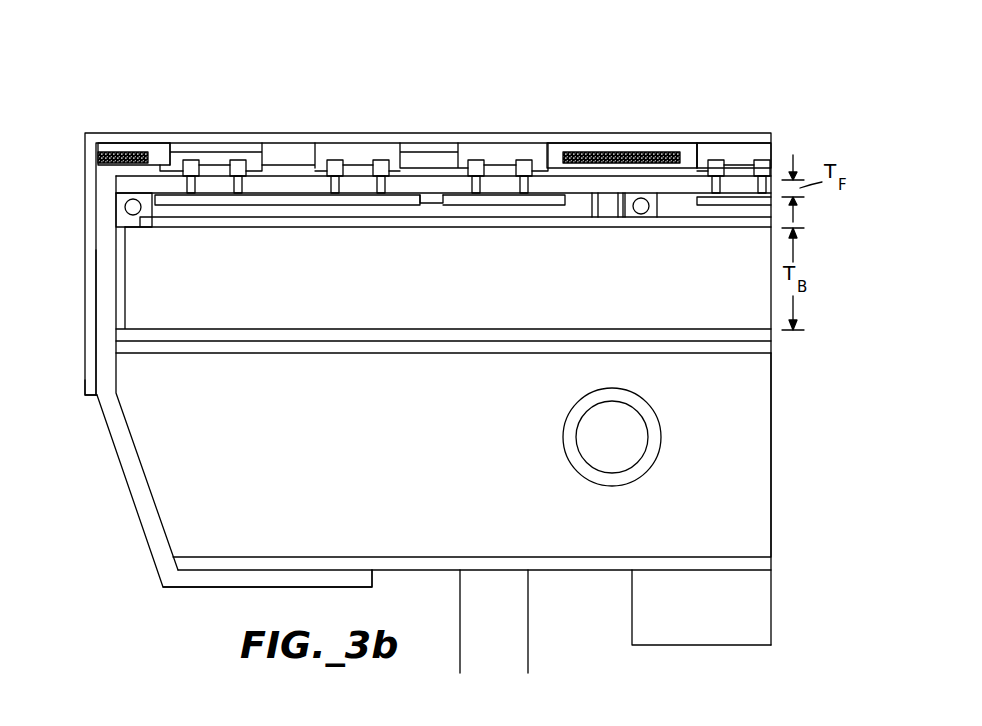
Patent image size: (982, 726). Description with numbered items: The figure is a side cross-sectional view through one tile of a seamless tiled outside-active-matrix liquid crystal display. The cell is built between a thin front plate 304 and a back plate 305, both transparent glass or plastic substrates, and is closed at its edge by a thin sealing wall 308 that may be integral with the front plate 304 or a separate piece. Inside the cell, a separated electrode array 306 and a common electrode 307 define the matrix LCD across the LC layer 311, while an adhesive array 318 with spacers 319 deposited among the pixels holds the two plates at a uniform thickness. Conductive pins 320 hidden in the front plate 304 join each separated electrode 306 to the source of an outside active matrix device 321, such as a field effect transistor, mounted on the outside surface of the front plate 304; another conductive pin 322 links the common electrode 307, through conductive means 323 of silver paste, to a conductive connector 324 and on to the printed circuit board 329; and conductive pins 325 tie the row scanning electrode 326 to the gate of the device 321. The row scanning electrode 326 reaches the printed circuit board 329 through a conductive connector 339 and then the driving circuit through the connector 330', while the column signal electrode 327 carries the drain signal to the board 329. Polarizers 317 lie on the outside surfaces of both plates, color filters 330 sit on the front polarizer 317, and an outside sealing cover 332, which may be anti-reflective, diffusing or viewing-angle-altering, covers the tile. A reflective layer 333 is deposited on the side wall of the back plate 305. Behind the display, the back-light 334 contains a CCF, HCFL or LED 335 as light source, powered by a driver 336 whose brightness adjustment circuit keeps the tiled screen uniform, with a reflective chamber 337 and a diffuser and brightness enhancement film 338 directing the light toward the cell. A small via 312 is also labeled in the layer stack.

The thin front plate 304 is at (108, 168).
The back plate 305 is at (140, 255).
The separated electrode array 306 is at (216, 165).
The common electrode 307 is at (350, 213).
The thin sealing wall 308 is at (103, 311).
The LC layer 311 is at (363, 203).
The via 312 is at (612, 235).
The polarizers 317 is at (742, 148).
The adhesive array 318 is at (648, 178).
The spacers 319 is at (646, 200).
The conductive pins 320 is at (432, 195).
The outside active matrix device 321 is at (760, 143).
The conductive pin 322 is at (585, 152).
The conductive means 323 is at (625, 200).
The conductive connector 324 is at (617, 207).
The conductive pin 325 is at (467, 145).
The row scanning electrode 326 is at (420, 160).
The column signal electrode 327 is at (138, 150).
The printed circuit board 329 is at (382, 563).
The color filters 330 is at (314, 145).
The connector 330' is at (539, 621).
The outside sealing cover 332 is at (112, 143).
The reflective layer 333 is at (112, 283).
The back-light 334 is at (755, 492).
The CCF, HCFL or LED 335 is at (623, 422).
The driver 336 is at (755, 620).
The reflective chamber 337 is at (748, 558).
The diffuser and brightness enhancement film 338 is at (769, 345).
The conductive connector 339 is at (100, 378).